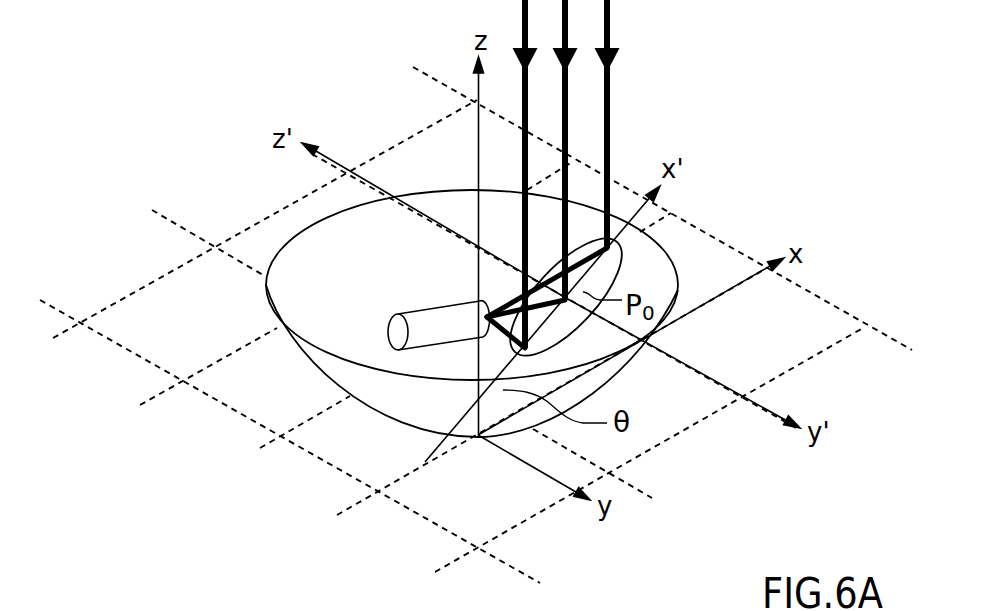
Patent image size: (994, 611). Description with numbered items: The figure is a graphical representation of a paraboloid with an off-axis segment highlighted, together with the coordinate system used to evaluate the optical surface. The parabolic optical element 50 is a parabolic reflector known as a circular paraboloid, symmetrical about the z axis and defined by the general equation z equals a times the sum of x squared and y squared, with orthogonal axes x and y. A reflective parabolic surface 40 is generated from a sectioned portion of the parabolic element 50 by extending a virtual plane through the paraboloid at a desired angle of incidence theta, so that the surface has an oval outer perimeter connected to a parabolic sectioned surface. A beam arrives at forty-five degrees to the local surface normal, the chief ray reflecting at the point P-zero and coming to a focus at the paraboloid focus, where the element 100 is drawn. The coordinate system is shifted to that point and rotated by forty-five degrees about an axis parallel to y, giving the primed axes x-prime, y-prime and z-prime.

The reflective parabolic surface 40 is at (603, 271).
The parabolic optical element 50 is at (330, 379).
The detector 100 is at (432, 335).